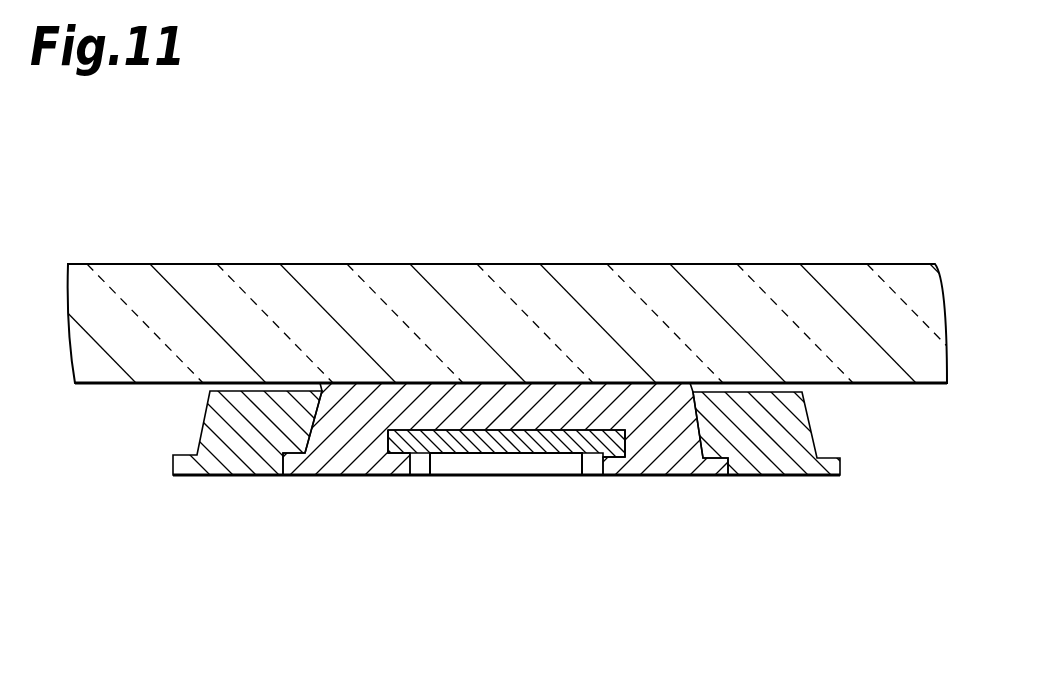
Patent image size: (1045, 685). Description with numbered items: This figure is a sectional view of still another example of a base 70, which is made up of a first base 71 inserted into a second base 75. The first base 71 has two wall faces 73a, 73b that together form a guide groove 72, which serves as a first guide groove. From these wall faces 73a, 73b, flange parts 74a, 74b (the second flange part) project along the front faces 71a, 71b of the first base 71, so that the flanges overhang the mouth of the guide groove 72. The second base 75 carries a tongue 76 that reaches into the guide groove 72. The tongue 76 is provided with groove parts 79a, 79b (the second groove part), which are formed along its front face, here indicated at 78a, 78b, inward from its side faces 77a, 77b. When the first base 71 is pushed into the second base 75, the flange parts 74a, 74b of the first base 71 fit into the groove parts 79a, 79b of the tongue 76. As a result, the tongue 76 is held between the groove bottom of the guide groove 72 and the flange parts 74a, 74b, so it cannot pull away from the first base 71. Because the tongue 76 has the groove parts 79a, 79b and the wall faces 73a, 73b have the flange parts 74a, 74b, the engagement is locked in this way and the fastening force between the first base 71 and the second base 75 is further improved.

The base 70 is at (153, 525).
The first base 71 is at (494, 380).
The front face 71a is at (682, 477).
The front face 71b is at (335, 477).
The guide groove 72 is at (497, 432).
The wall face 73a is at (605, 455).
The wall face 73b is at (395, 450).
The flange part 74a is at (613, 477).
The flange part 74b is at (418, 470).
The second base 75 is at (237, 476).
The tongue 76 is at (535, 432).
The side face 77a is at (628, 447).
The side face 77b is at (377, 437).
The right recess 78a is at (592, 477).
The left recess 78b is at (420, 477).
The groove part 79a is at (638, 477).
The groove part 79b is at (408, 457).